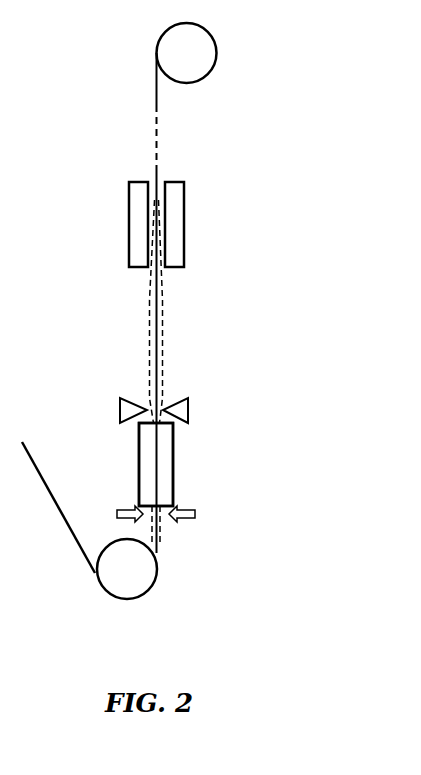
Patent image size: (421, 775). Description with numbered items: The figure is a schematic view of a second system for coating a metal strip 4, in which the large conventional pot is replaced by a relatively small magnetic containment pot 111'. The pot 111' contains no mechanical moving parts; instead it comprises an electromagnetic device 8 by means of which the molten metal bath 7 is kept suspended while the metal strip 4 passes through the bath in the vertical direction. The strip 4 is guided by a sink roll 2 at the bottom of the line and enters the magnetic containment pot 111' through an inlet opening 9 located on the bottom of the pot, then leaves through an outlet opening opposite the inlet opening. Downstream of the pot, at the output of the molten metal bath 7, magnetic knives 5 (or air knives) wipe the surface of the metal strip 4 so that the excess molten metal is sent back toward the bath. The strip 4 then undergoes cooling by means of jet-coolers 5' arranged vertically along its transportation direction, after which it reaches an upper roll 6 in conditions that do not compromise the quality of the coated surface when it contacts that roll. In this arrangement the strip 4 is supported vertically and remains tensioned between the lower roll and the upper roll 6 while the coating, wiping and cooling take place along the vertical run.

The sink roll 2 is at (92, 580).
The metal strip 4 is at (152, 314).
The magnetic knives 5 is at (183, 388).
The jet-coolers 5' is at (123, 228).
The upper roll 6 is at (186, 84).
The molten metal bath 7 is at (150, 450).
The electromagnetic device 8 is at (183, 527).
The inlet opening 9 is at (150, 502).
The magnetic containment pot 111' is at (204, 464).